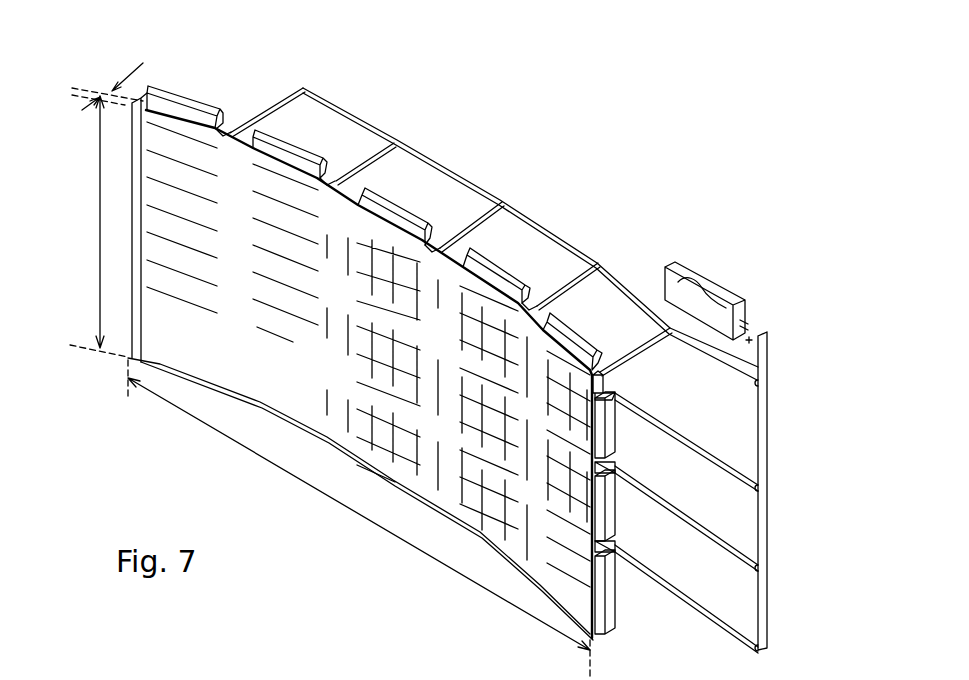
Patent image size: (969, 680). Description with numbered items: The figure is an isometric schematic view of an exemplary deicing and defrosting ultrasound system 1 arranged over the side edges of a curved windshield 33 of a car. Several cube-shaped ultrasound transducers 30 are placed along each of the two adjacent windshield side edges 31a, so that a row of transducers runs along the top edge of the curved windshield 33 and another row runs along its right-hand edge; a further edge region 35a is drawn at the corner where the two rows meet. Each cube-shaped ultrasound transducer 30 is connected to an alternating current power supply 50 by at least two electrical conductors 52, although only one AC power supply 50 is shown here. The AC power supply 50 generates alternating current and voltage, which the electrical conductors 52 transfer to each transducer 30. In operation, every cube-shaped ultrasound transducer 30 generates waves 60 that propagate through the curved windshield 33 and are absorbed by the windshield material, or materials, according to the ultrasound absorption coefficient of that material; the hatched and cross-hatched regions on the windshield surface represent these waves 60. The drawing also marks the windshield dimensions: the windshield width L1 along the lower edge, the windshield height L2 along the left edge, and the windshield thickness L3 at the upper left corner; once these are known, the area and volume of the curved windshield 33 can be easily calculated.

The deicing and defrosting ultrasound system 1 is at (534, 173).
The cube-shaped ultrasound transducer 30 is at (183, 100).
The windshield side edge 31a is at (546, 308).
The curved windshield 33 is at (327, 212).
The connecting rail 35a is at (604, 385).
The alternating current (AC) power supply 50 is at (718, 293).
The electrical conductor 52 is at (759, 331).
The waves 60 is at (177, 187).
The windshield width L1 is at (432, 562).
The windshield height L2 is at (99, 222).
The windshield thickness L3 is at (114, 86).